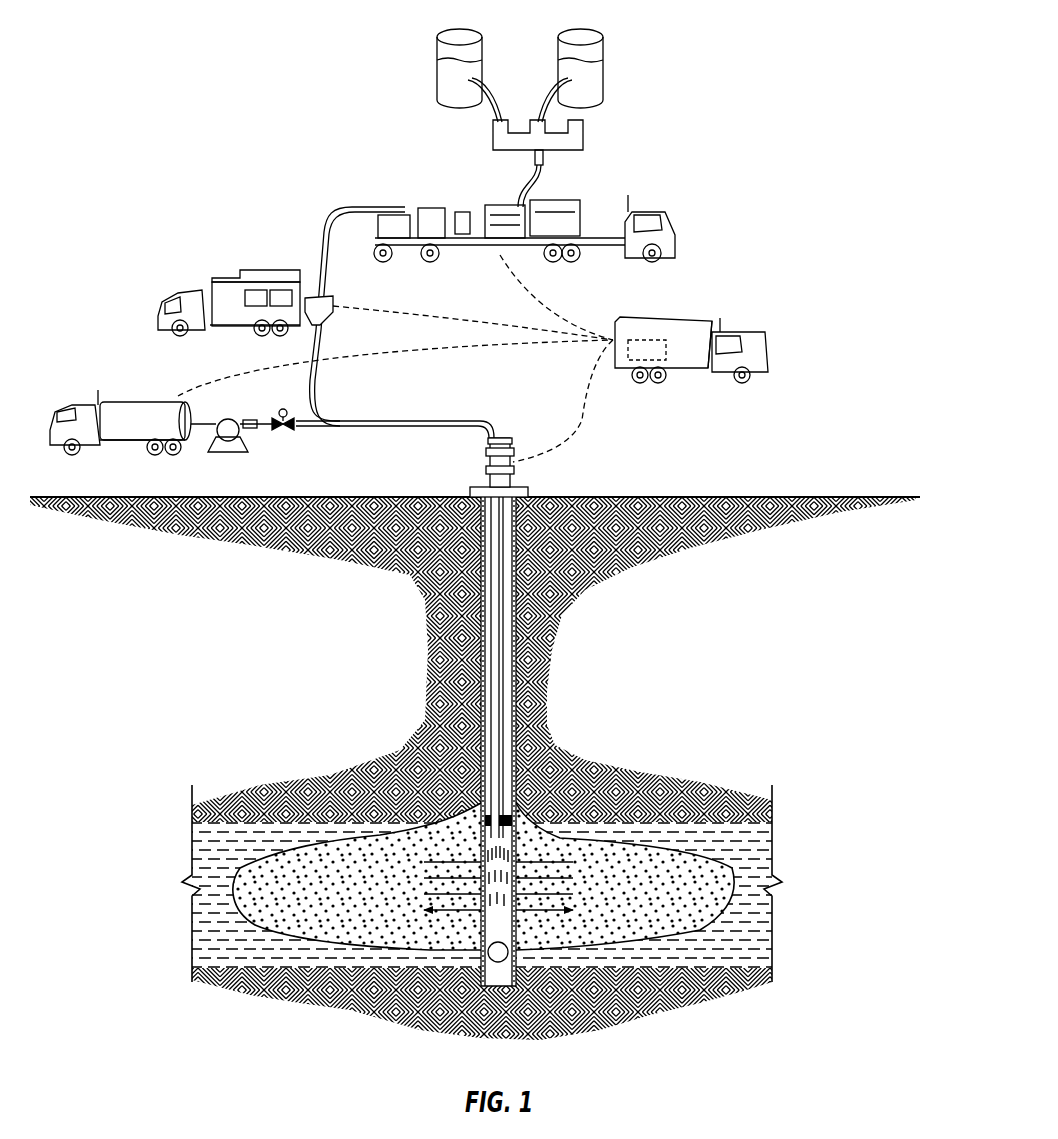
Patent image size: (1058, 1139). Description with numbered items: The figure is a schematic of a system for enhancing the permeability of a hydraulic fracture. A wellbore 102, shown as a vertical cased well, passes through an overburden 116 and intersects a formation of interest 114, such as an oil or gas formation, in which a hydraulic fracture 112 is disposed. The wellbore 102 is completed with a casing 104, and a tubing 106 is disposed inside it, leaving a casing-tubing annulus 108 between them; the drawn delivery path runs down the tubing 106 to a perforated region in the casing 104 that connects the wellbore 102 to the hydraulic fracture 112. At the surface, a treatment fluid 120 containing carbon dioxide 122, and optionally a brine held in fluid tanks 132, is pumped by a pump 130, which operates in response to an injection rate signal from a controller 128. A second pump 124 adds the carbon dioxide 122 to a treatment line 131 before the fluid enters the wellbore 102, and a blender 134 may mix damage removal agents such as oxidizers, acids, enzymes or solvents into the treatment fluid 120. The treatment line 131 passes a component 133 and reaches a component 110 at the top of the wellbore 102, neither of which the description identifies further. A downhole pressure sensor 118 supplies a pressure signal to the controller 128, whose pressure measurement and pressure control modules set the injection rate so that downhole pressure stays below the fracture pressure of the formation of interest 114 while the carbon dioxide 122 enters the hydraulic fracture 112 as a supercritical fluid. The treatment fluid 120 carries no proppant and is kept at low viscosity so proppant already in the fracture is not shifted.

The wellbore 102 is at (522, 692).
The casing 104 is at (517, 660).
The tubing 106 is at (503, 726).
The casing-tubing annulus 108 is at (505, 757).
The wellhead 110 is at (503, 438).
The hydraulic fracture 112 is at (364, 903).
The formation of interest 114 is at (756, 953).
The overburden 116 is at (665, 552).
The downhole pressure sensor 118 is at (513, 965).
The treatment fluid 120 is at (470, 915).
The carbon dioxide 122 is at (168, 400).
The second pump 124 is at (229, 452).
The controller 128 is at (657, 338).
The pump 130 is at (632, 222).
The treatment line 131 is at (370, 428).
The fluid tanks 132 is at (460, 36).
The valve 133 is at (289, 428).
The blender 134 is at (335, 318).